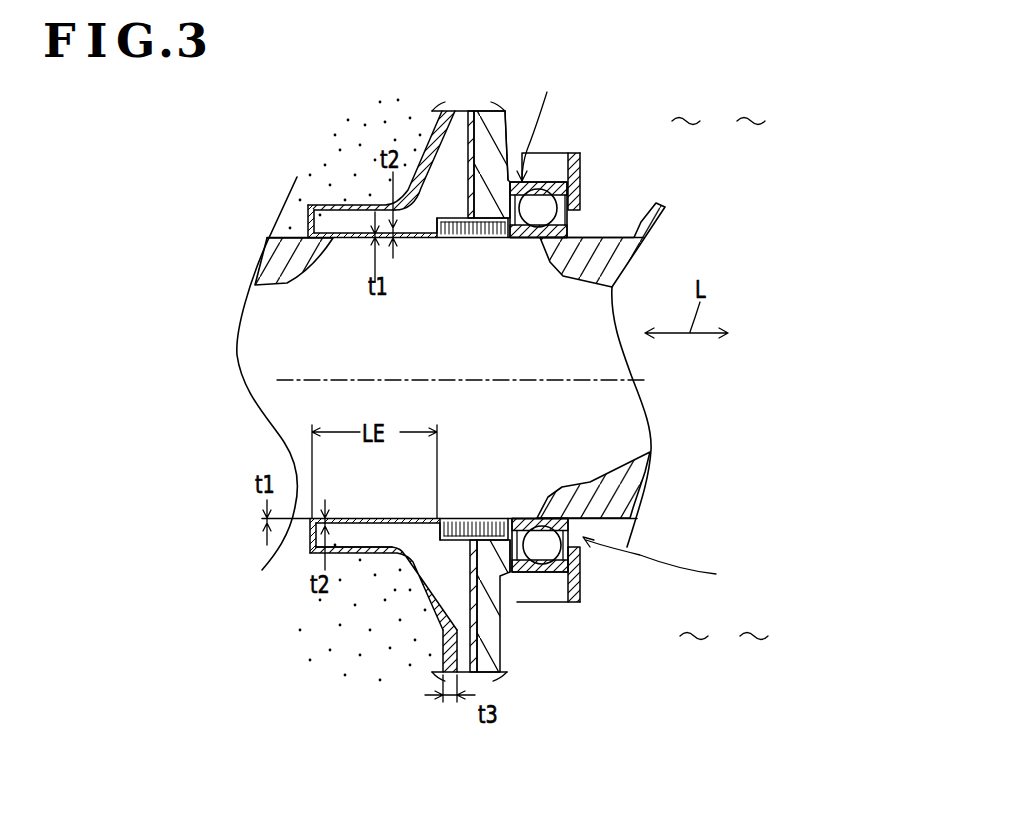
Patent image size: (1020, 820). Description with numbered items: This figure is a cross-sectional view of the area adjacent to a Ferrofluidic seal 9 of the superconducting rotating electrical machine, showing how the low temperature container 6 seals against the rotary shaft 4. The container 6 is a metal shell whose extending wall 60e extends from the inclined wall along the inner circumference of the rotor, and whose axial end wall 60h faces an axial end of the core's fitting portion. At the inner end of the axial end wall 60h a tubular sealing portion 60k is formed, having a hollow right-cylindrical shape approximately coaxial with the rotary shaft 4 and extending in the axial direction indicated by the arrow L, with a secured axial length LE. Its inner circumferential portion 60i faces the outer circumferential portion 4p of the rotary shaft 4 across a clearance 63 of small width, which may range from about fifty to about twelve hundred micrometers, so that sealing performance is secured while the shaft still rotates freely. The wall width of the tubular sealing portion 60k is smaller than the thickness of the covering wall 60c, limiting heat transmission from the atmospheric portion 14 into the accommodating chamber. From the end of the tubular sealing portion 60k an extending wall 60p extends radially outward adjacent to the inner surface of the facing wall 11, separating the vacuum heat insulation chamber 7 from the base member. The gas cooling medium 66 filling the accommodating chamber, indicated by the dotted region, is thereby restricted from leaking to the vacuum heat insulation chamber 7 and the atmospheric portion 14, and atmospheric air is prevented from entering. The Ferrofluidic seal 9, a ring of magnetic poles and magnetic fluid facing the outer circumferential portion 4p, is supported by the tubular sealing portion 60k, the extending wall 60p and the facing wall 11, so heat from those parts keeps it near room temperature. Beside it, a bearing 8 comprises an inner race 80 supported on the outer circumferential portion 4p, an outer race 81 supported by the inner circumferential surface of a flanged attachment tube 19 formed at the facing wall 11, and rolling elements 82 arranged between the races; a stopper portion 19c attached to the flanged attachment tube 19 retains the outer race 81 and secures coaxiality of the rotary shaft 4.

The rotary shaft 4 is at (617, 252).
The outer circumferential portion 4p is at (272, 237).
The low temperature container 6 is at (445, 110).
The vacuum heat insulation chamber 7 is at (452, 155).
The bearing 8 is at (623, 331).
The Ferrofluidic seal 9 is at (490, 238).
The facing wall 11 is at (494, 162).
The atmospheric portion 14 is at (720, 382).
The flanged attachment tube 19 is at (550, 153).
The stopper portion 19c is at (580, 155).
The covering wall 60c is at (443, 702).
The extending wall 60e is at (333, 204).
The axial end wall 60h is at (297, 218).
The inner circumferential portion 60i is at (322, 247).
The tubular sealing portion 60k is at (417, 237).
The extending wall 60p is at (488, 110).
The clearance 63 is at (353, 238).
The gas cooling medium 66 is at (335, 130).
The inner race 80 is at (565, 236).
The outer race 81 is at (543, 181).
The rolling elements 82 is at (543, 208).